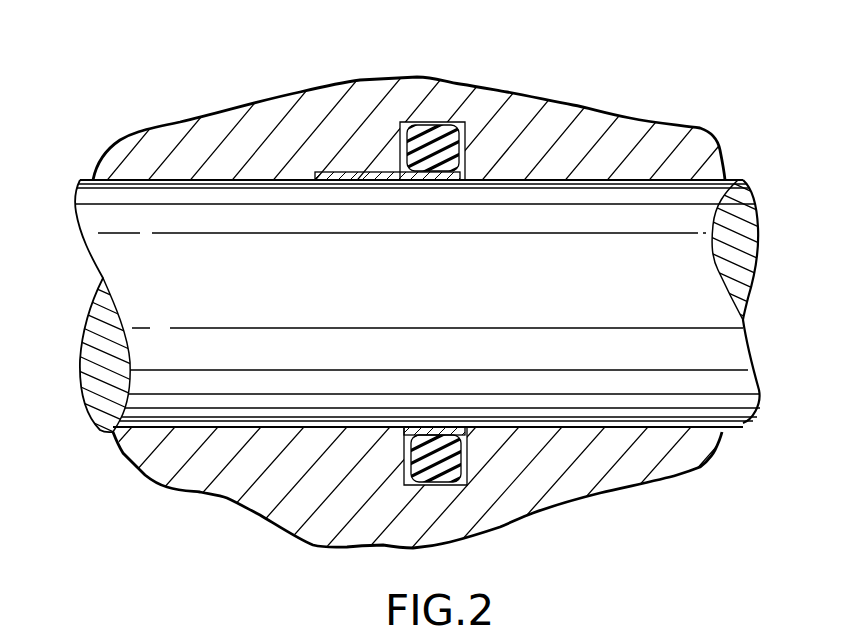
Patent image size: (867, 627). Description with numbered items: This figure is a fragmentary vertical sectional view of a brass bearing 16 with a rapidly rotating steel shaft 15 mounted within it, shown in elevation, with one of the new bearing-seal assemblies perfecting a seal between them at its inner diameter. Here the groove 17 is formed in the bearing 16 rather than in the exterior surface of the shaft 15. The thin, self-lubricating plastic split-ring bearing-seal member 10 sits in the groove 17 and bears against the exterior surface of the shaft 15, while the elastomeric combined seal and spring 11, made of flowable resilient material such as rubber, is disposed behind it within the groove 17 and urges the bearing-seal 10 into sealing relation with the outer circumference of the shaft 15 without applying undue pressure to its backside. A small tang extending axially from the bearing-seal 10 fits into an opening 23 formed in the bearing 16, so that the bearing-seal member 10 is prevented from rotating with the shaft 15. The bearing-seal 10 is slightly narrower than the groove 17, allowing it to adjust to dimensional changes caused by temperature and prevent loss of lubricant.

The bearing-seal member 10 is at (453, 185).
The elastomeric combined seal and spring 11 is at (428, 120).
The steel shaft 15 is at (540, 318).
The brass bearing 16 is at (570, 125).
The groove 17 is at (467, 138).
The opening 23 is at (372, 181).